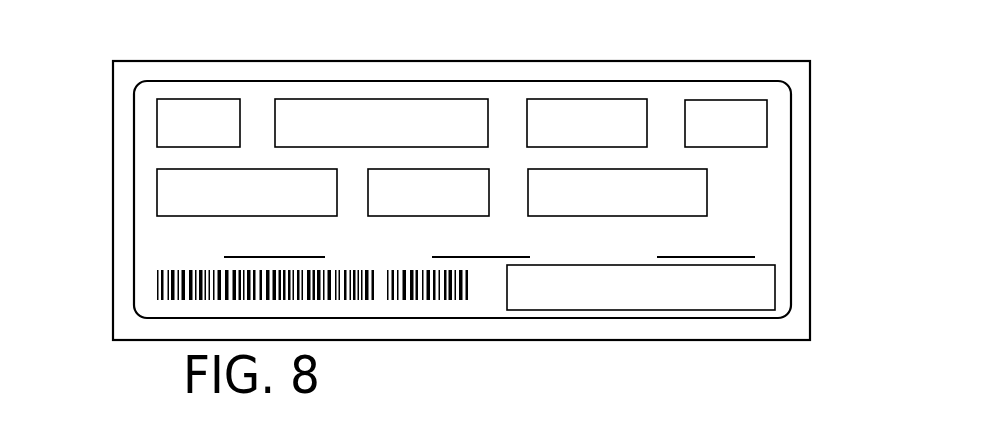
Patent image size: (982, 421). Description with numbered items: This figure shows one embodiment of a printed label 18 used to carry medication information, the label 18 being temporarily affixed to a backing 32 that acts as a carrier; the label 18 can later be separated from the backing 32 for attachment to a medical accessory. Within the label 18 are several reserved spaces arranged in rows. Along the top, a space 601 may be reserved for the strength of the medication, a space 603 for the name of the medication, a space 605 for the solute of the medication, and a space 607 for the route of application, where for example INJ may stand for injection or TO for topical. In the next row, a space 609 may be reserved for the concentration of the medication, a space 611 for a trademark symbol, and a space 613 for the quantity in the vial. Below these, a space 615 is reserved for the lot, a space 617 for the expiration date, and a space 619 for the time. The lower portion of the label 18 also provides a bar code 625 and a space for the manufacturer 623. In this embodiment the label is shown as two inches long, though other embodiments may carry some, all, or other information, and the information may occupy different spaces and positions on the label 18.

The backing 32 is at (205, 68).
The label 18 is at (752, 86).
The space for strength of medication 601 is at (177, 121).
The space for name of medication 603 is at (352, 110).
The space for solute of medication 605 is at (586, 112).
The space for route of application 607 is at (748, 122).
The space for concentration of medication 609 is at (177, 192).
The space for trademark symbol 611 is at (438, 183).
The space for quantity in the vial 613 is at (688, 196).
The space for lot 615 is at (155, 245).
The space for expiration date 617 is at (455, 240).
The space for time 619 is at (688, 240).
The space for manufacturer 623 is at (780, 277).
The bar code 625 is at (155, 287).